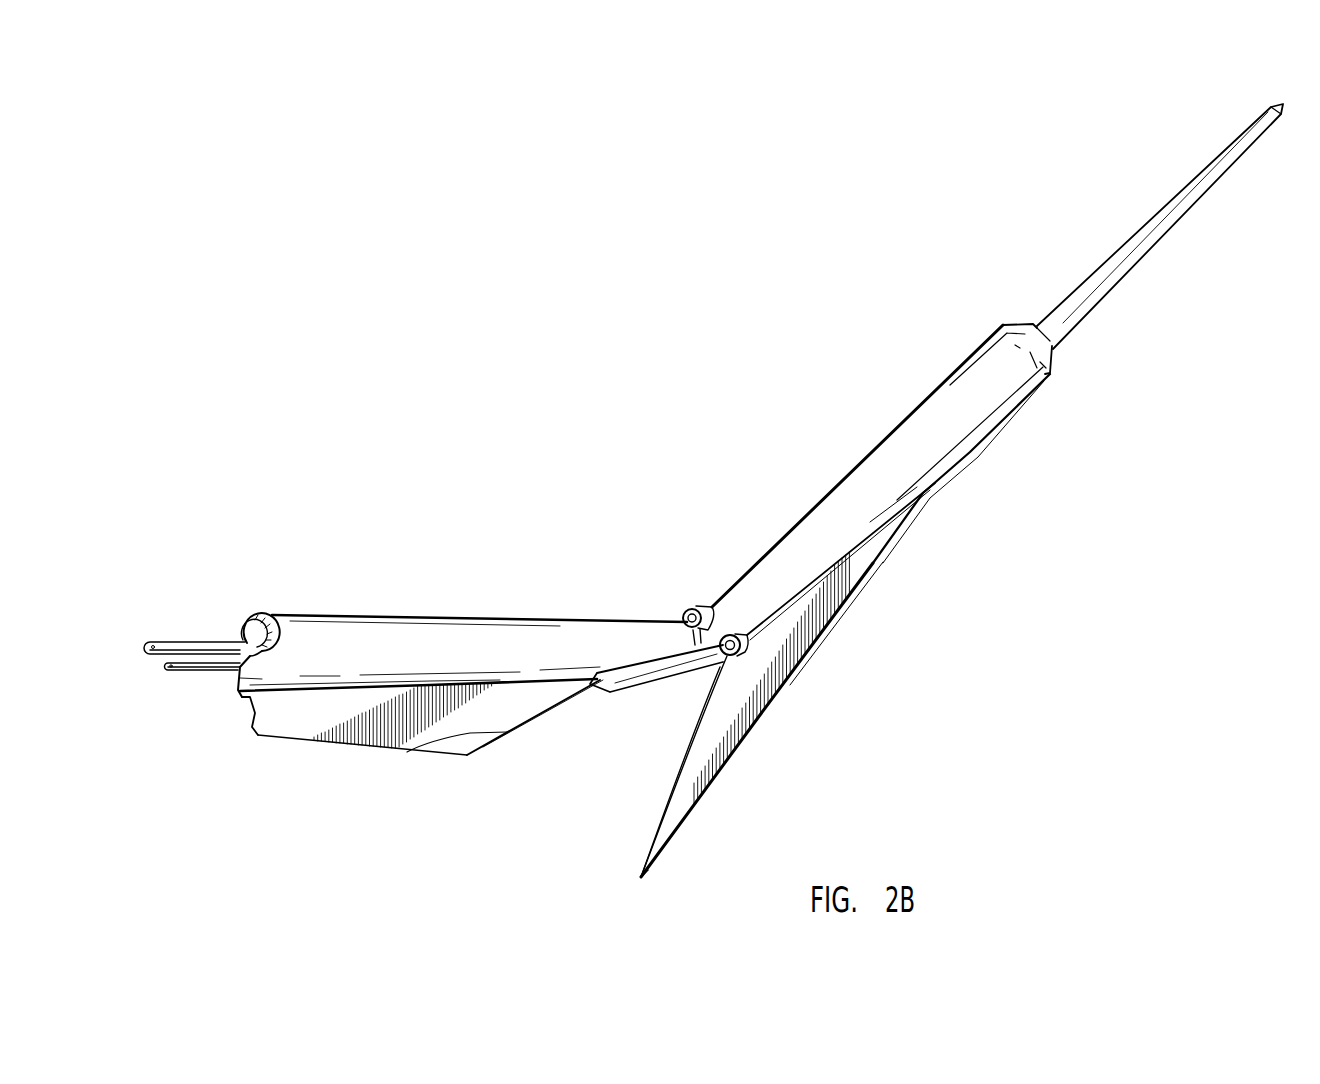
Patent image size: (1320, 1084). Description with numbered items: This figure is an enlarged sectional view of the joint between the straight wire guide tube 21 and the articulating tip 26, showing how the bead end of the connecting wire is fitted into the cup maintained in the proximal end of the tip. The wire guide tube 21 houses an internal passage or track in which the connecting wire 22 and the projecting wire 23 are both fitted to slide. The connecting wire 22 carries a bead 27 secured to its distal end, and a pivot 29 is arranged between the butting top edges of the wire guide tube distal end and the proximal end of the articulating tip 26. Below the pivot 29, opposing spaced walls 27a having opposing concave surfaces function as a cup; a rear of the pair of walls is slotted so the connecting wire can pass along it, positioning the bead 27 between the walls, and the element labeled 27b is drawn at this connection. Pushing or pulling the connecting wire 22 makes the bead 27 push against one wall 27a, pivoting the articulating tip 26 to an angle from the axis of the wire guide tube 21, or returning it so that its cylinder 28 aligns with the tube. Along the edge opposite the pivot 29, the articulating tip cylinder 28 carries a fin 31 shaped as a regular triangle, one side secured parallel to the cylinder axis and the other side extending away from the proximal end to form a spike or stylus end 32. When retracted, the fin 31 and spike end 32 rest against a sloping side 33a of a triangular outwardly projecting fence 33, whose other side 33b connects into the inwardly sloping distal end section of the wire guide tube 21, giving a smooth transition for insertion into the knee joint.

The straight wire guide tube 21 is at (367, 627).
The connecting wire 22 is at (193, 673).
The projecting wire 23 is at (180, 640).
The articulating tip 26 is at (524, 412).
The bead 27 is at (753, 712).
The opposing spaced walls 27a is at (740, 633).
The panel arm 27b is at (723, 657).
The articulating tip cylinder 28 is at (945, 400).
The pivot 29 is at (684, 609).
The fin 31 is at (738, 740).
The spike or stylus end 32 is at (643, 883).
The fence 33 is at (386, 760).
The sloping side of fence 33a is at (407, 752).
The other triangle fence side 33b is at (273, 737).